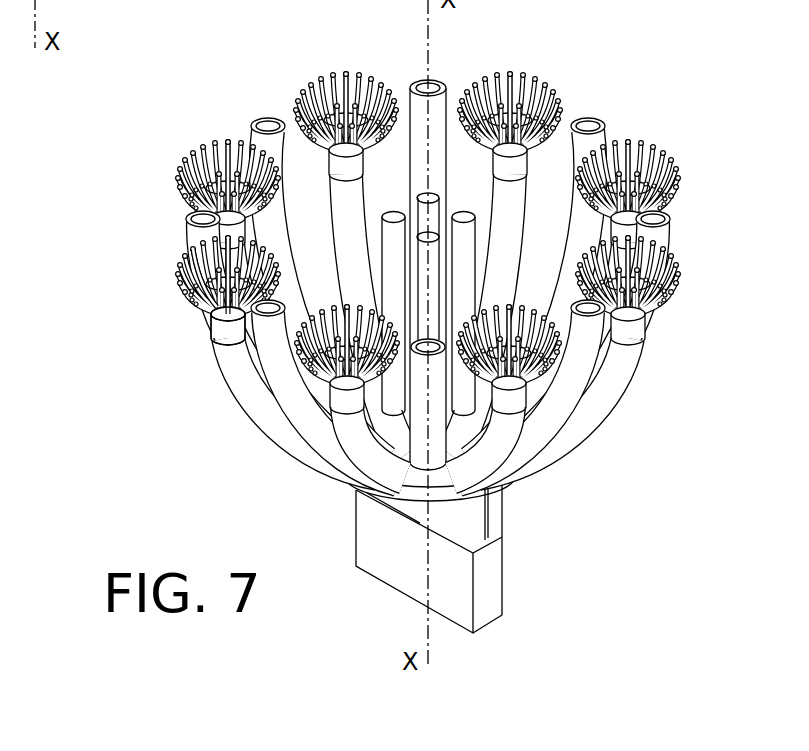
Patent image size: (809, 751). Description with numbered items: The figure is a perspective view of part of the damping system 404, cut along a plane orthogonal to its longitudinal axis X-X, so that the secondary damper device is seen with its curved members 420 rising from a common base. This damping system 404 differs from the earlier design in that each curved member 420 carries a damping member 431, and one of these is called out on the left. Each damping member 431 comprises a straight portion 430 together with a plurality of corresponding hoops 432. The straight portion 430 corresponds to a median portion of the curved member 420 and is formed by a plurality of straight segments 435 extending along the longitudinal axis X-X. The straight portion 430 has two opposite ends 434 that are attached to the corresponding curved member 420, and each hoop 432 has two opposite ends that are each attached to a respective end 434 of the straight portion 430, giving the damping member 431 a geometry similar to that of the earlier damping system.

The damping system 404 is at (655, 126).
The curved member 420 is at (250, 370).
The straight portion 430 is at (205, 252).
The damping member 431 is at (178, 288).
The hoop 432 is at (205, 308).
The end of the straight portion 434 is at (212, 322).
The straight segment 435 is at (220, 268).